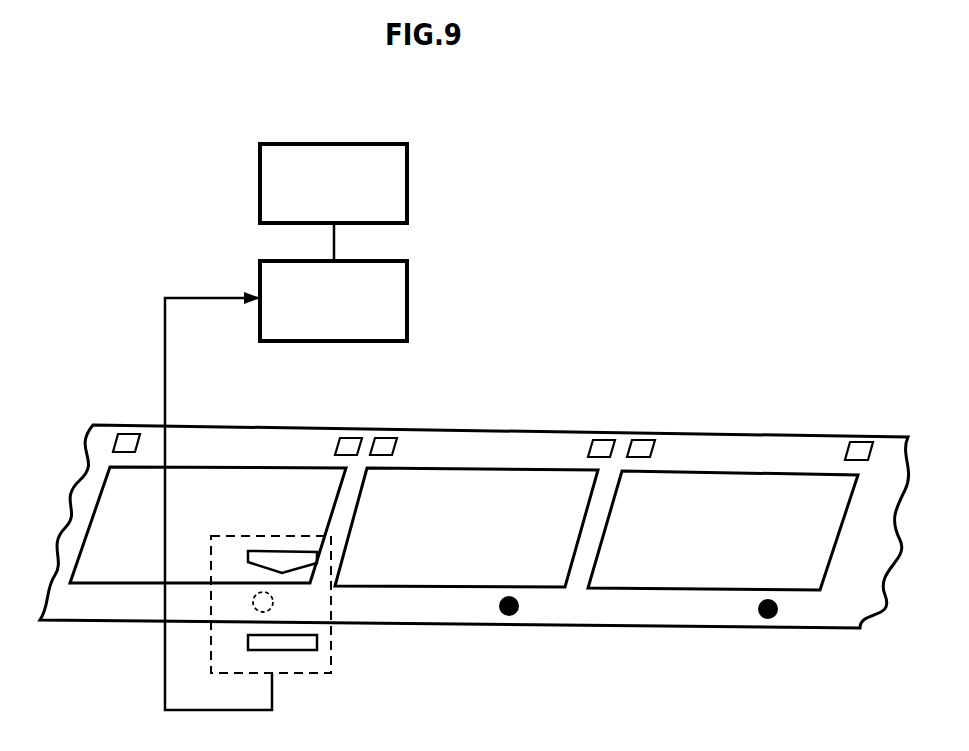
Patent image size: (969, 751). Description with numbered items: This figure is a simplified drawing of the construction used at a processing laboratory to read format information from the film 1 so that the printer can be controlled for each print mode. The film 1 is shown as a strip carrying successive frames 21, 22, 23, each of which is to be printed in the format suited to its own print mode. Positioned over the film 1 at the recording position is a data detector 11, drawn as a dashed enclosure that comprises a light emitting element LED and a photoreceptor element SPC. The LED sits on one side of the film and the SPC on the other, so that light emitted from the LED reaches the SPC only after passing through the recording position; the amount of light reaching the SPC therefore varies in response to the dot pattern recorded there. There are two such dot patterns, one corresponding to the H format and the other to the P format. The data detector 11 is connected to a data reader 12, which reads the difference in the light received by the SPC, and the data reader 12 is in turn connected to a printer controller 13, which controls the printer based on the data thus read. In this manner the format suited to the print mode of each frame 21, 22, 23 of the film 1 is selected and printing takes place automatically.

The film 1 is at (790, 445).
The data detector 11 is at (309, 608).
The data reader 12 is at (398, 288).
The printer controller 13 is at (398, 185).
The frame 21 is at (290, 475).
The frame 22 is at (500, 492).
The frame 23 is at (712, 487).
The light emitting element LED is at (285, 557).
The photoreceptor element SPC is at (310, 639).